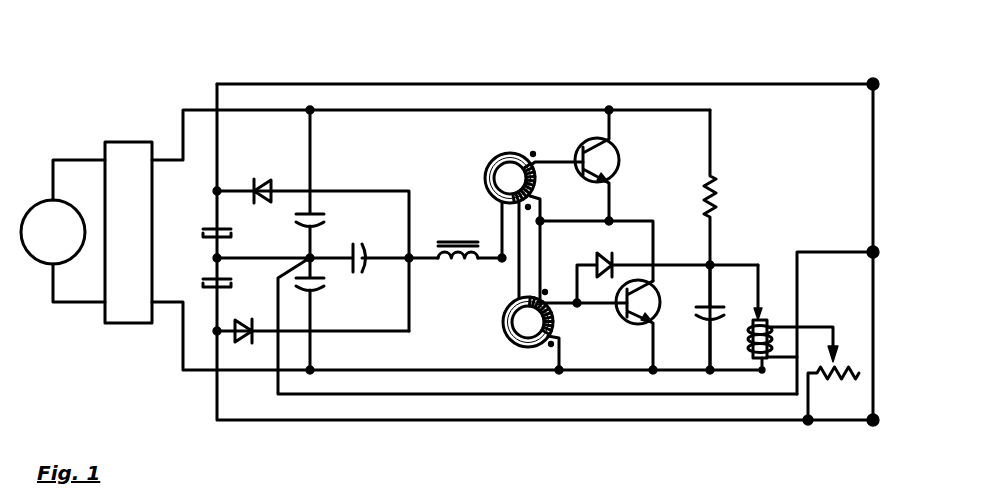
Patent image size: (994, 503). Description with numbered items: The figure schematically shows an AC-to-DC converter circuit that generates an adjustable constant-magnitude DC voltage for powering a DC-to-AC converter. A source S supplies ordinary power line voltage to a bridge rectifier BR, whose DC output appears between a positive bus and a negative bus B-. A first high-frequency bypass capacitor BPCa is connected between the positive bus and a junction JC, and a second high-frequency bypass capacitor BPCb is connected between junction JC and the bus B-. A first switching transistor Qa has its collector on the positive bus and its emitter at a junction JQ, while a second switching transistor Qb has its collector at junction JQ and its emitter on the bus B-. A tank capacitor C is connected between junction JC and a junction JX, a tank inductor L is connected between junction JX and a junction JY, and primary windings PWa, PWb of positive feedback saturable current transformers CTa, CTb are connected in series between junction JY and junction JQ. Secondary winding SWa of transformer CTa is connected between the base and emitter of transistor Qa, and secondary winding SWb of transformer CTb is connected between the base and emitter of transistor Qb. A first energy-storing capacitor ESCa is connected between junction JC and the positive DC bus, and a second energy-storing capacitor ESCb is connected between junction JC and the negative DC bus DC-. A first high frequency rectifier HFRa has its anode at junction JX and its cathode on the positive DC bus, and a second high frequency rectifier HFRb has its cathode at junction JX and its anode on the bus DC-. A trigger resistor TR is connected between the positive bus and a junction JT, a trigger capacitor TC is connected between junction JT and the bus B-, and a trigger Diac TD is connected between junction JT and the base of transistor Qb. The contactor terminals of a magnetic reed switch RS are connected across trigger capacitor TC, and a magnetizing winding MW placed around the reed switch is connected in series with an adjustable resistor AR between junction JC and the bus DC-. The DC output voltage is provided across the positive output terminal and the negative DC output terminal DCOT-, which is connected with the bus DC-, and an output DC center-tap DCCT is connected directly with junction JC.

The source S is at (63, 231).
The bridge rectifier BR is at (128, 232).
The B− bus B- is at (197, 373).
The negative DC bus DC- is at (343, 421).
The negative DC output terminal DCOT- is at (868, 428).
The output DC center-tap DCCT is at (871, 247).
The first energy-storing capacitor ESCa is at (204, 232).
The second energy-storing capacitor ESCb is at (214, 290).
The first high frequency rectifier HFRa is at (255, 182).
The second high frequency rectifier HFRb is at (245, 341).
The first high-frequency bypass capacitor BPCa is at (318, 212).
The second high-frequency bypass capacitor BPCb is at (318, 296).
The junction JC is at (306, 256).
The tank capacitor C is at (364, 250).
The junction JX is at (406, 261).
The tank inductor L is at (452, 240).
The junction JY is at (501, 262).
The first positive feedback saturable current transformer CTa is at (510, 190).
The second positive feedback saturable current transformer CTb is at (526, 348).
The primary winding of transformer CTa PWa is at (510, 163).
The primary winding of transformer CTb PWb is at (527, 298).
The secondary winding of transformer CTa SWa is at (536, 179).
The secondary winding of transformer CTb SWb is at (558, 321).
The first switching transistor Qa is at (620, 161).
The second switching transistor Qb is at (661, 312).
The junction JQ is at (612, 218).
The trigger resistor TR is at (716, 200).
The junction JT is at (712, 263).
The trigger Diac TD is at (613, 257).
The trigger capacitor TC is at (719, 308).
The magnetic reed switch RS is at (752, 352).
The magnetizing winding MW is at (768, 344).
The adjustable resistor AR is at (849, 368).